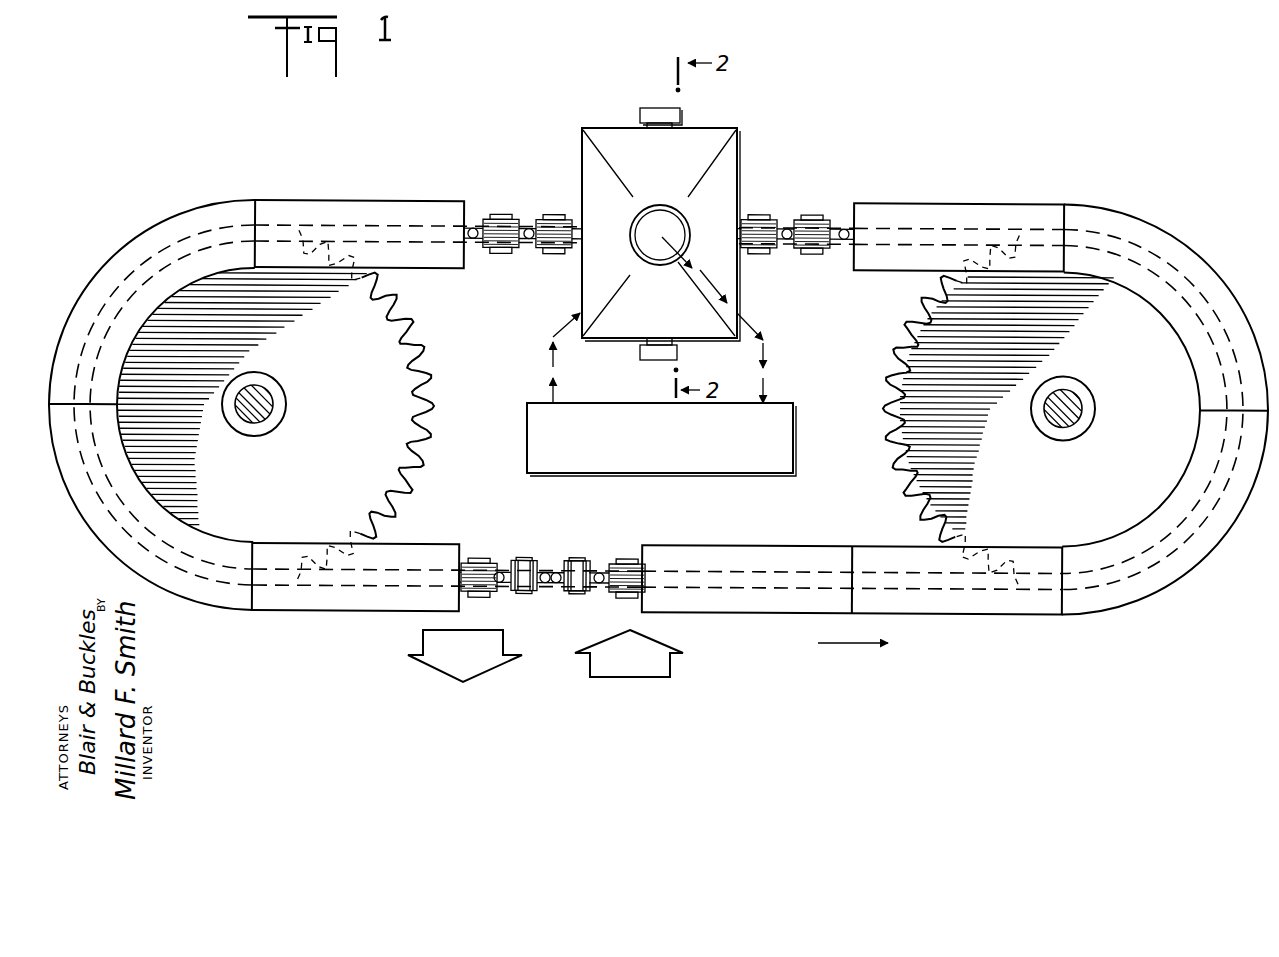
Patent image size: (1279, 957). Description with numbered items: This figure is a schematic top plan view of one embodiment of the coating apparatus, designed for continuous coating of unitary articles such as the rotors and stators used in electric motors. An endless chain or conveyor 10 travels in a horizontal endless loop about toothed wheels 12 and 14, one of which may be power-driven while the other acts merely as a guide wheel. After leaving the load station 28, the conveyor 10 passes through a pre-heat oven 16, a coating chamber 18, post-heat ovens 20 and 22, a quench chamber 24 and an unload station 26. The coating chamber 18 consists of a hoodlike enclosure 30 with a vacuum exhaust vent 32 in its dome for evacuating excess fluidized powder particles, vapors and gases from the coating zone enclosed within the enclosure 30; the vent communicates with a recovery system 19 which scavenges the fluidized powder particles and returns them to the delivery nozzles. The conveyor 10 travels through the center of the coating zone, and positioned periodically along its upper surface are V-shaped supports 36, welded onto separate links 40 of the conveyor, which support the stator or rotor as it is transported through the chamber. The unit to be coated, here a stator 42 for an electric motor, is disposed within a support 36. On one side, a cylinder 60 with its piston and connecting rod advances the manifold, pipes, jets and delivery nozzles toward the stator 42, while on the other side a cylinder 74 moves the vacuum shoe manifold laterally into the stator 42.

The endless chain or conveyor 10 is at (88, 478).
The toothed wheel 12 is at (391, 372).
The toothed wheel 14 is at (939, 378).
The pre-heat oven 16 is at (1023, 601).
The coating chamber 18 is at (604, 120).
The recovery system 19 is at (756, 465).
The post-heat oven 20 is at (275, 205).
The post-heat oven 22 is at (97, 290).
The quench chamber 24 is at (283, 598).
The unload station 26 is at (428, 668).
The load station 28 is at (670, 665).
The hoodlike enclosure 30 is at (596, 178).
The vacuum exhaust vent 32 is at (666, 222).
The V-shaped support 36 is at (508, 216).
The link 40 is at (553, 590).
The stator 42 is at (540, 250).
The cylinder 60 is at (640, 352).
The cylinder 74 is at (668, 117).